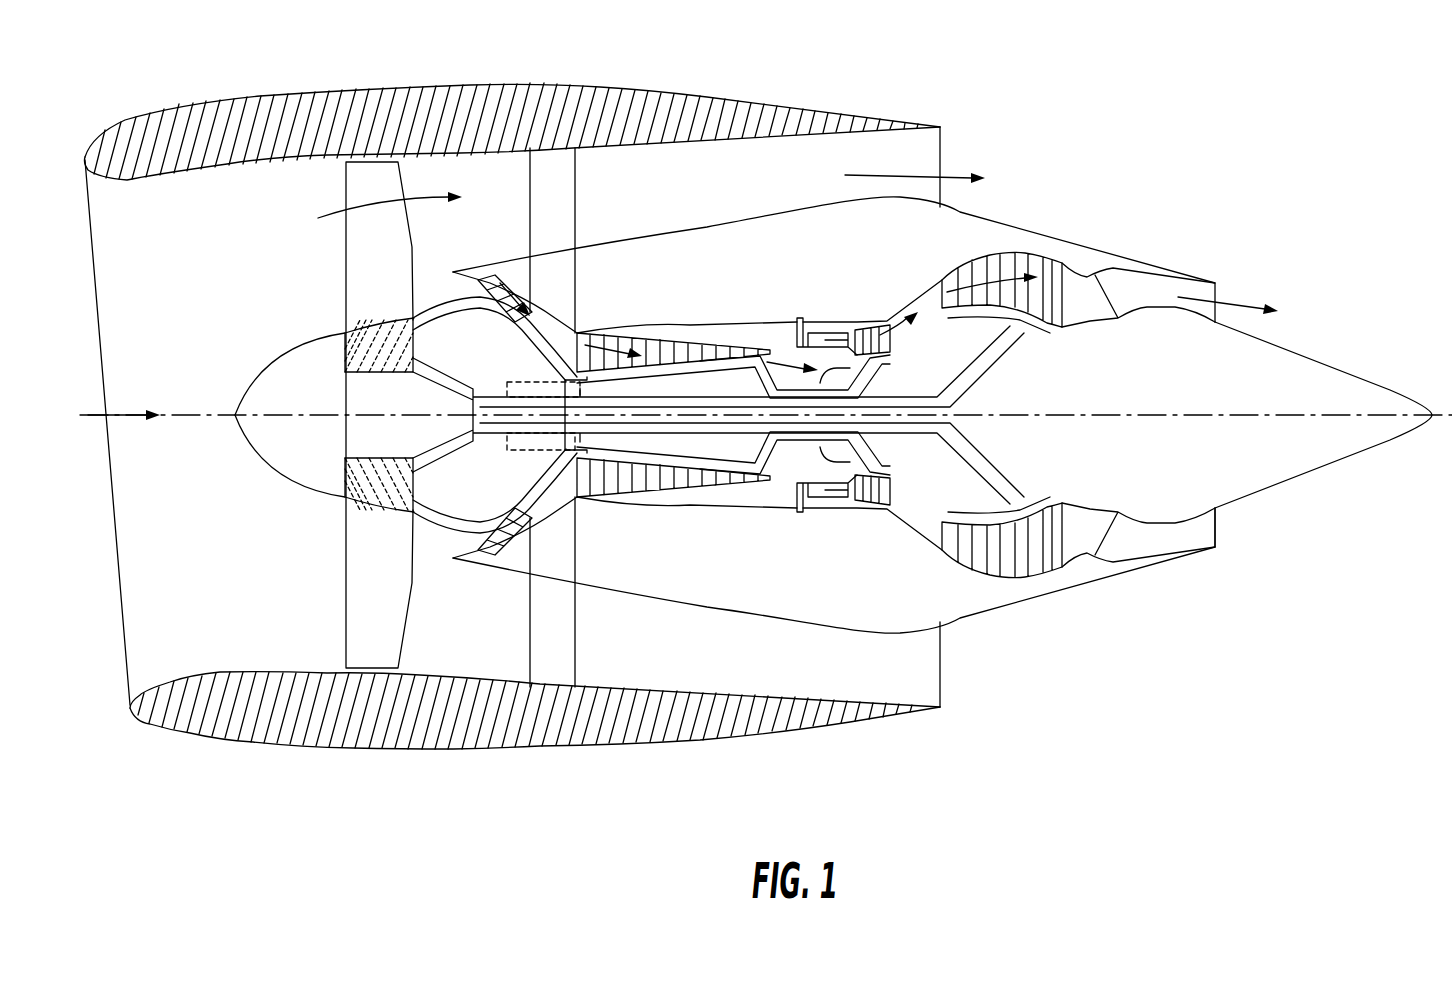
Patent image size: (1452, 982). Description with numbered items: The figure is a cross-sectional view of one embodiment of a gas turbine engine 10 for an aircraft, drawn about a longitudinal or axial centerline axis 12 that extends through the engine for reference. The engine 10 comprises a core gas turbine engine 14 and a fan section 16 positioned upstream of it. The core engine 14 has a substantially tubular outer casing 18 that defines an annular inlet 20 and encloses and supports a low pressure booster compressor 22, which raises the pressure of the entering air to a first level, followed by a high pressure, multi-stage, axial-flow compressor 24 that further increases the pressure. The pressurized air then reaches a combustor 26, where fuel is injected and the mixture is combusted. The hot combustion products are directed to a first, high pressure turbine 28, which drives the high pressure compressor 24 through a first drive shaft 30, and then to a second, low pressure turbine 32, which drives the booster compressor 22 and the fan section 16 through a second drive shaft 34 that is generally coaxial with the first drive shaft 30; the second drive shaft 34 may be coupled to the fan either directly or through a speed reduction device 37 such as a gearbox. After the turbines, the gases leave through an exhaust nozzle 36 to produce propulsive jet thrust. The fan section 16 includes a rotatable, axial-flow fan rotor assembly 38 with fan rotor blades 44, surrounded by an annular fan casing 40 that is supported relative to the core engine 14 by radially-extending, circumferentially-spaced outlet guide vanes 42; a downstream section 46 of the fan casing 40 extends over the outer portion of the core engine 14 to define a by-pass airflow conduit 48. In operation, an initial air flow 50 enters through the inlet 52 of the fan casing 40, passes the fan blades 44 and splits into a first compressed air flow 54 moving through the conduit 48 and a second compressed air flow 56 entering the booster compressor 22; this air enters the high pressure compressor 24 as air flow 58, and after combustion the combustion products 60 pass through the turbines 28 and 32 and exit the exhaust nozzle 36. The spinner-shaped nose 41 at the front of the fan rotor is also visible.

The gas turbine engine 10 is at (1127, 104).
The longitudinal centerline axis 12 is at (1110, 412).
The core gas turbine engine 14 is at (758, 284).
The fan section 16 is at (512, 117).
The outer casing 18 is at (755, 613).
The annular inlet 20 is at (455, 549).
The booster compressor 22 is at (540, 497).
The high pressure compressor 24 is at (611, 490).
The combustor 26 is at (821, 500).
The first turbine 28 is at (902, 503).
The first drive shaft 30 is at (830, 384).
The second turbine 32 is at (1035, 578).
The second drive shaft 34 is at (525, 395).
The exhaust nozzle 36 is at (1218, 288).
The speed reduction device 37 is at (537, 452).
The fan rotor assembly 38 is at (410, 375).
The fan casing 40 is at (440, 748).
The spinner 41 is at (292, 468).
The outlet guide vanes 42 is at (577, 175).
The fan rotor blades 44 is at (346, 612).
The downstream section 46 is at (787, 104).
The by-pass airflow conduit 48 is at (631, 412).
The initial air flow 50 is at (118, 412).
The inlet 52 is at (125, 660).
The first compressed air flow 54 is at (365, 205).
The second compressed air flow 56 is at (443, 290).
The air flow entering high pressure compressor 58 is at (600, 336).
The combustion products 60 is at (867, 325).